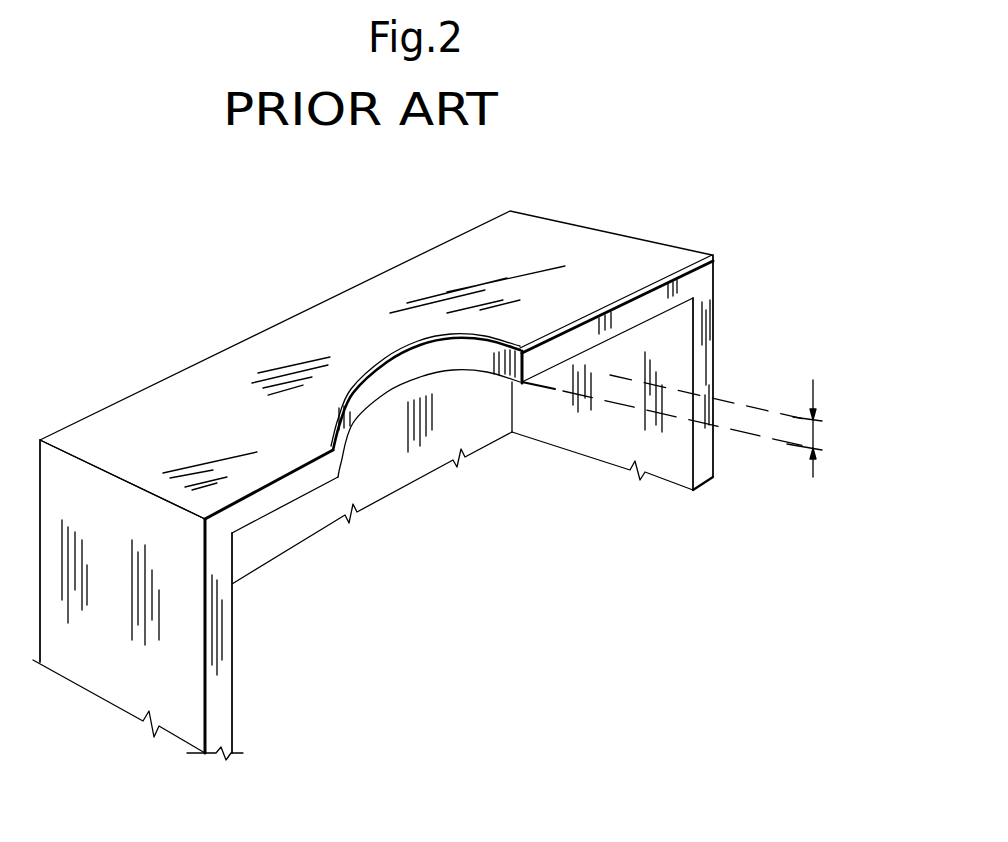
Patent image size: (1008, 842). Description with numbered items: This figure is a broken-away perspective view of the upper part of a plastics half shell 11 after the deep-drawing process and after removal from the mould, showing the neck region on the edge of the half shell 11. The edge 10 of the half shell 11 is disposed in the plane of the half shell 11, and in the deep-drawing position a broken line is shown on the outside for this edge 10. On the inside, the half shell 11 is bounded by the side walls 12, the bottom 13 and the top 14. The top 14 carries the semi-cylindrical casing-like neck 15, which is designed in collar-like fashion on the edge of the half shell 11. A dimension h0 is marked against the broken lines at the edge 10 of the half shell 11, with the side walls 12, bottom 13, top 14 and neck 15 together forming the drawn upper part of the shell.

The edge 10 is at (700, 397).
The half shell 11 is at (170, 362).
The side walls 12 is at (137, 687).
The bottom 13 is at (365, 488).
The top 14 is at (245, 425).
The semi-cylindrical casing-like neck 15 is at (378, 385).
The plate thickness dimension h0 is at (813, 440).